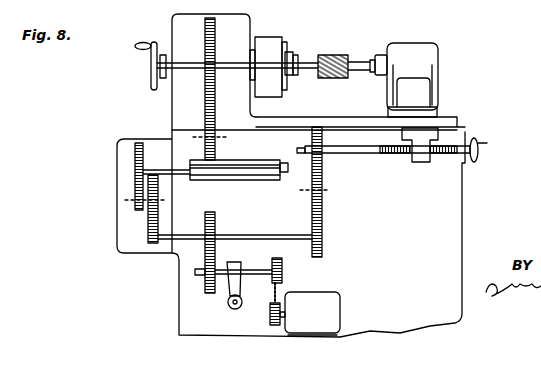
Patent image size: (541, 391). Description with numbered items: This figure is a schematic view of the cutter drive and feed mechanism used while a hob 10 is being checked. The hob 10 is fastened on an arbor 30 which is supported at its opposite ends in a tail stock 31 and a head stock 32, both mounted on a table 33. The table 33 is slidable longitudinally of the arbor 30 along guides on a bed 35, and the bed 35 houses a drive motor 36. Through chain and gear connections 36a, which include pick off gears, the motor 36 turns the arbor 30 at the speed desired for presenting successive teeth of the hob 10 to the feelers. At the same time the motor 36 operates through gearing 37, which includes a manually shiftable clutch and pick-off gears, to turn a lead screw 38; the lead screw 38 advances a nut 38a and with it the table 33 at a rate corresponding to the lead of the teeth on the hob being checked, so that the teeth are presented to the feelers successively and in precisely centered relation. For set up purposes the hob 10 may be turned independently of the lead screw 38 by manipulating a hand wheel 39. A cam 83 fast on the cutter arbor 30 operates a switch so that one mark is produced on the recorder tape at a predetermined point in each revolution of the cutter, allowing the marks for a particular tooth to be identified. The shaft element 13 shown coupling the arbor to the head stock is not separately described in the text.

The hob 10 is at (328, 78).
The motor shaft 13 is at (352, 60).
The arbor 30 is at (303, 62).
The tail stock 31 is at (418, 43).
The head stock 32 is at (245, 30).
The table 33 is at (452, 116).
The bed 35 is at (463, 205).
The drive motor 36 is at (340, 298).
The chain and gear connections 36a is at (134, 210).
The gearing 37 is at (327, 196).
The lead screw 38 is at (358, 154).
The nut 38a is at (417, 163).
The hand wheel 39 is at (147, 85).
The cam 83 is at (160, 80).